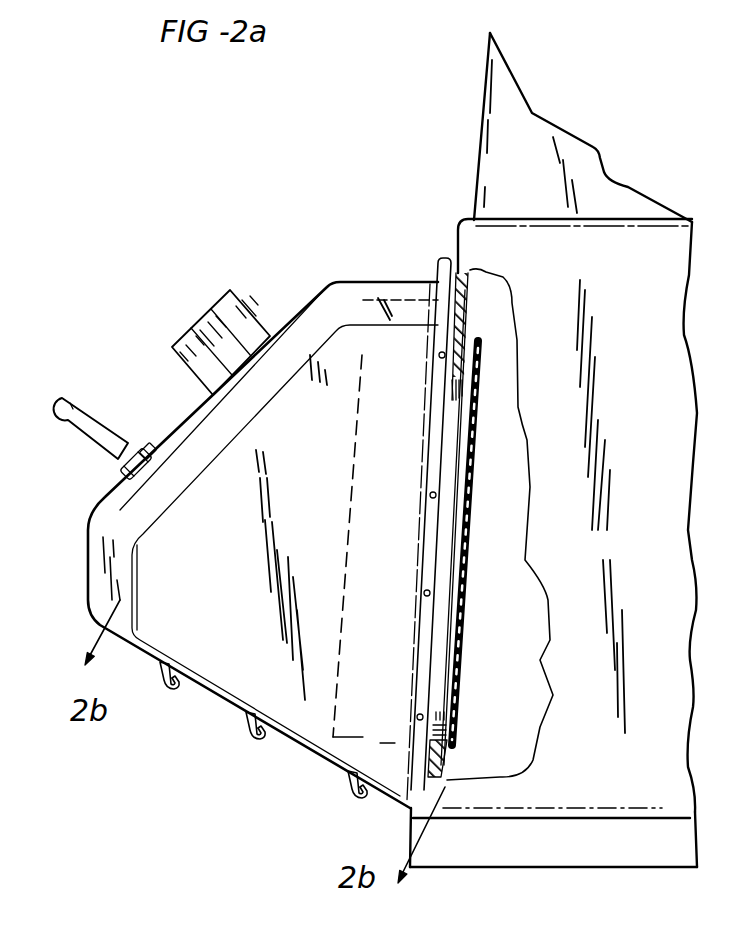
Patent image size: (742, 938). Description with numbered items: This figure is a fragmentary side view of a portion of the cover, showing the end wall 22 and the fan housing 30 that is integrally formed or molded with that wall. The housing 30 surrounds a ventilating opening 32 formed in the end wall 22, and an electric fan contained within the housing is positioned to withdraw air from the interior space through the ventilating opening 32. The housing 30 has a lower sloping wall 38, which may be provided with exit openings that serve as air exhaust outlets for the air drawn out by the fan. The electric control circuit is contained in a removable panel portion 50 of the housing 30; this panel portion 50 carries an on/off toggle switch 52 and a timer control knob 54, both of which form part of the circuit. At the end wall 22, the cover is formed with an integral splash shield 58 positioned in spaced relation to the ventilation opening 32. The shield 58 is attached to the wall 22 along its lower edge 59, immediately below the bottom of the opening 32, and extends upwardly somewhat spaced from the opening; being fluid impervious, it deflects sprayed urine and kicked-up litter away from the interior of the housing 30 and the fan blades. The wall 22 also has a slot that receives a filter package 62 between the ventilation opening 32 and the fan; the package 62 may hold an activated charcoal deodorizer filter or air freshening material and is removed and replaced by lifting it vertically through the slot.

The end wall 22 is at (467, 317).
The fan housing 30 is at (207, 587).
The ventilating opening 32 is at (452, 397).
The lower sloping wall 38 is at (217, 693).
The removable panel portion 50 is at (333, 310).
The on/off toggle switch 52 is at (90, 410).
The timer control knob 54 is at (220, 298).
The splash shield 58 is at (467, 633).
The lower edge 59 is at (457, 747).
The filter package 62 is at (436, 268).